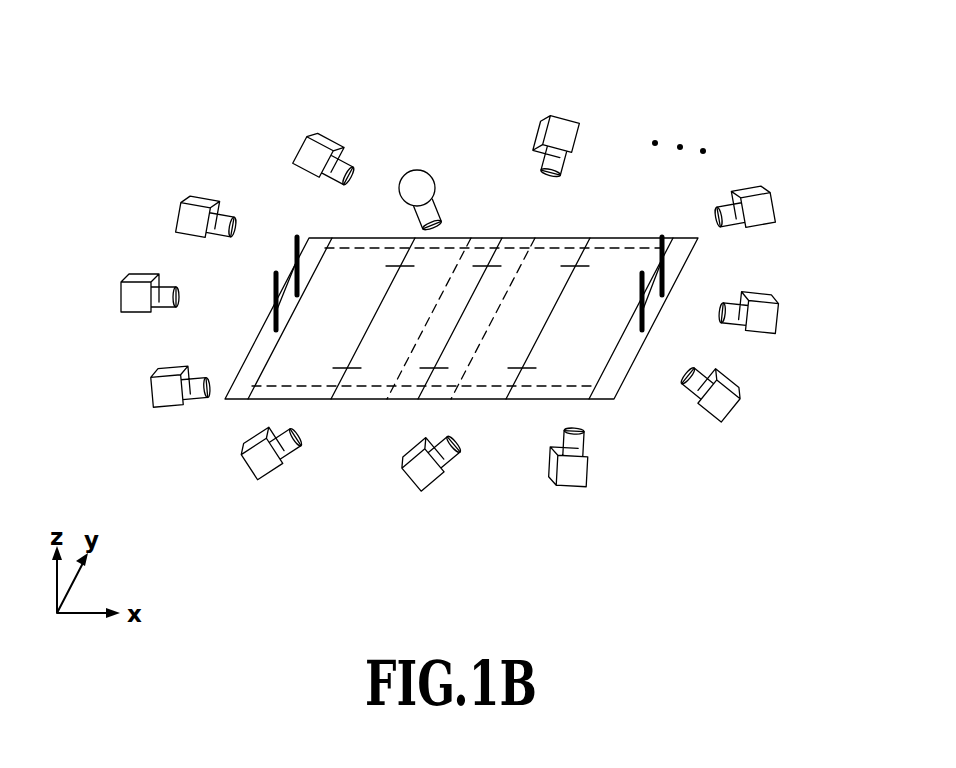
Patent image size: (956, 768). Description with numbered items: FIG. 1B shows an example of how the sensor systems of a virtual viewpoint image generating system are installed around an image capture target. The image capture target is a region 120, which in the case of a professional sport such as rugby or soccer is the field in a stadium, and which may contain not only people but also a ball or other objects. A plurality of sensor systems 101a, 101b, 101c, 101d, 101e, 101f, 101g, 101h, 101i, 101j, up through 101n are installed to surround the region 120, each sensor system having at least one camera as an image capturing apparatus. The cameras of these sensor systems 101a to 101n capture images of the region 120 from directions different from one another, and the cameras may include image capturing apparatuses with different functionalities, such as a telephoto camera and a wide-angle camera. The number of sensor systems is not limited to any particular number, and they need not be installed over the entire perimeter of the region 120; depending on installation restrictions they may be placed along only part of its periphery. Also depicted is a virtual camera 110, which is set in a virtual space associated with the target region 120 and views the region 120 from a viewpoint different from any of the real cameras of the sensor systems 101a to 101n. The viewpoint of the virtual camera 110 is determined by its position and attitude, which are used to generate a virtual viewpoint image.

The sensor system 101a is at (326, 143).
The sensor system 101b is at (203, 208).
The sensor system 101c is at (140, 283).
The sensor system 101d is at (168, 396).
The sensor system 101e is at (262, 465).
The sensor system 101f is at (420, 478).
The sensor system 101g is at (573, 480).
The sensor system 101h is at (722, 405).
The sensor system 101i is at (762, 322).
The sensor system 101j is at (755, 192).
The sensor system 101n is at (568, 128).
The virtual camera 110 is at (420, 184).
The region 120 is at (558, 256).